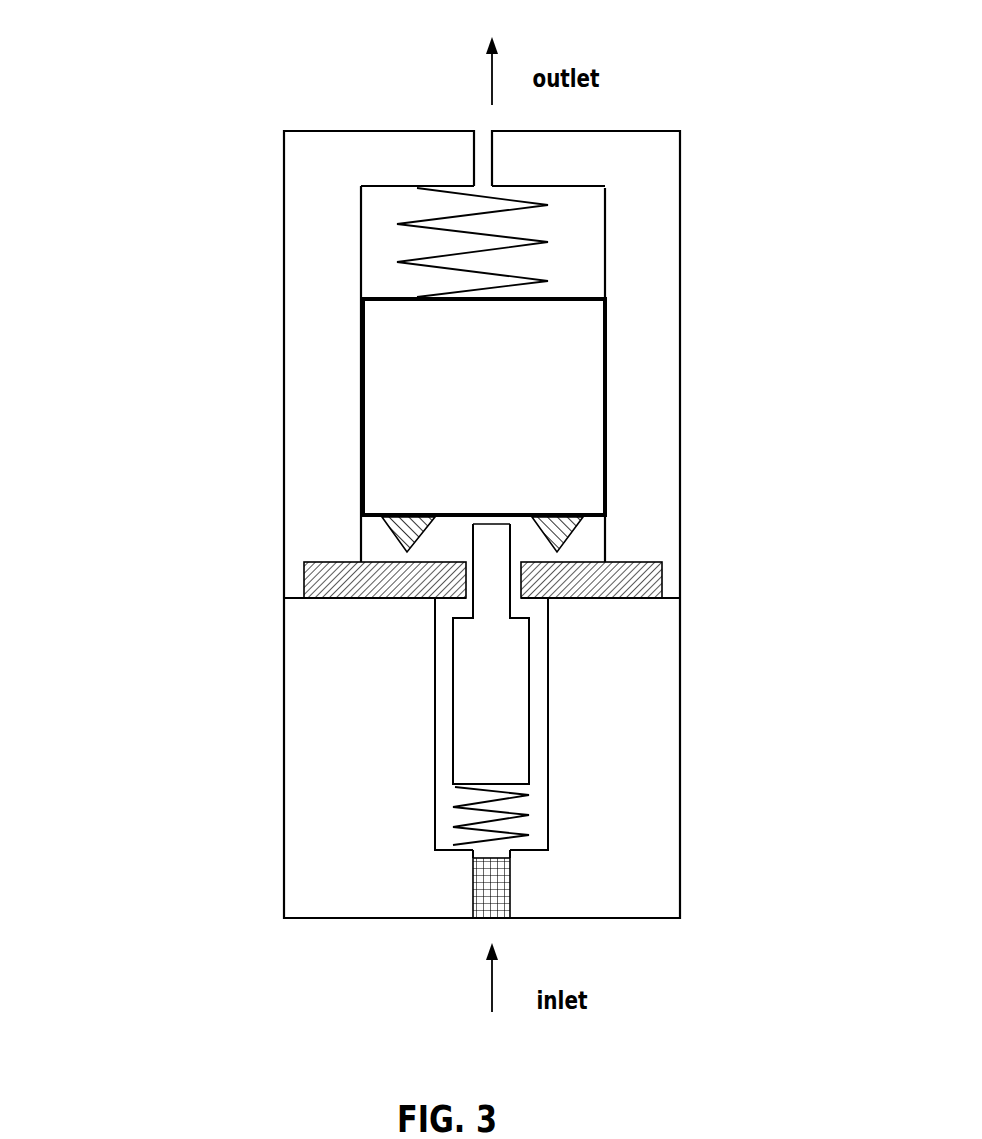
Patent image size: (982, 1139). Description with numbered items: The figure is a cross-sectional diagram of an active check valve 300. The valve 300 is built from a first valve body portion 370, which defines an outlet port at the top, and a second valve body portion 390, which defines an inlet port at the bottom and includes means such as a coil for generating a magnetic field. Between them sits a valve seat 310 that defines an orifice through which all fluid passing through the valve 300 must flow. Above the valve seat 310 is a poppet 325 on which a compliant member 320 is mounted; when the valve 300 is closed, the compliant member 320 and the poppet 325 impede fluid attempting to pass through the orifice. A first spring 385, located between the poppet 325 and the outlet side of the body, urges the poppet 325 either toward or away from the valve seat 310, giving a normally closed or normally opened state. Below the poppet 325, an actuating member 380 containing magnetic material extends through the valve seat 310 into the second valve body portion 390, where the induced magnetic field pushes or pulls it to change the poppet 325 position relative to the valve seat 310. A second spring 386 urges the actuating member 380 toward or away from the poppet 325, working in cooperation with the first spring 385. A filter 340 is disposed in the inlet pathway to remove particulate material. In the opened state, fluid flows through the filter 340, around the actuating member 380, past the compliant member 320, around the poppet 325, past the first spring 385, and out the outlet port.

The active check valve 300 is at (148, 103).
The valve seat 310 is at (585, 600).
The compliant member 320 is at (547, 513).
The poppet 325 is at (450, 379).
The filter 340 is at (492, 918).
The first valve body portion 370 is at (677, 365).
The actuating member 380 is at (468, 734).
The first spring 385 is at (418, 258).
The second spring 386 is at (465, 828).
The second valve body portion 390 is at (338, 793).